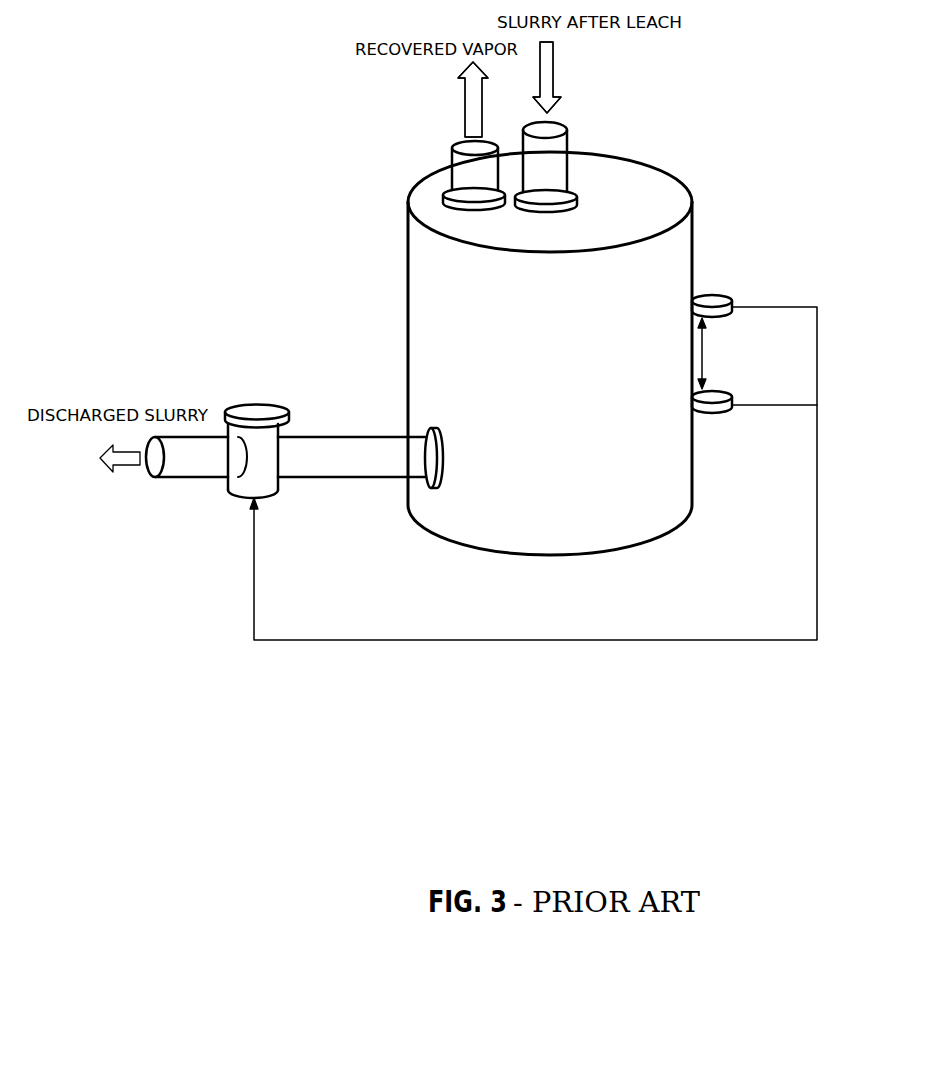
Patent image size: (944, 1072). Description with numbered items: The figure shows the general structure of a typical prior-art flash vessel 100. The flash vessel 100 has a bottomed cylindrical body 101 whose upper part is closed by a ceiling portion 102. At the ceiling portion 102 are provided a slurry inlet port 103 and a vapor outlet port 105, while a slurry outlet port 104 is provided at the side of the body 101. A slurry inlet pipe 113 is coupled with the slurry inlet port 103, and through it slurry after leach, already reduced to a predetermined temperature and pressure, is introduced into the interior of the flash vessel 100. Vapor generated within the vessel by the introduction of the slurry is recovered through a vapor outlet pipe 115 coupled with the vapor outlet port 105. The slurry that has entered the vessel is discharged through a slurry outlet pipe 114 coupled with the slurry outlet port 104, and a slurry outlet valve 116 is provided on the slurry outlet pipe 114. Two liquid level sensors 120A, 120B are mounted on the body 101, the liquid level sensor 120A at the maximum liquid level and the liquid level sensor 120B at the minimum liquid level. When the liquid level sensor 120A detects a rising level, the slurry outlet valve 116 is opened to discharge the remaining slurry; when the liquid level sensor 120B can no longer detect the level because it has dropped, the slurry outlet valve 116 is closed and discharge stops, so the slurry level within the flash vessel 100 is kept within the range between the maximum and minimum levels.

The flash vessel 100 is at (481, 434).
The body 101 is at (677, 275).
The ceiling portion 102 is at (670, 200).
The slurry inlet port 103 is at (570, 192).
The slurry outlet port 104 is at (413, 493).
The vapor outlet port 105 is at (447, 188).
The slurry inlet pipe 113 is at (558, 122).
The slurry outlet pipe 114 is at (308, 437).
The vapor outlet pipe 115 is at (453, 157).
The slurry outlet valve 116 is at (255, 407).
The liquid level sensor 120A is at (730, 293).
The liquid level sensor 120B is at (723, 413).